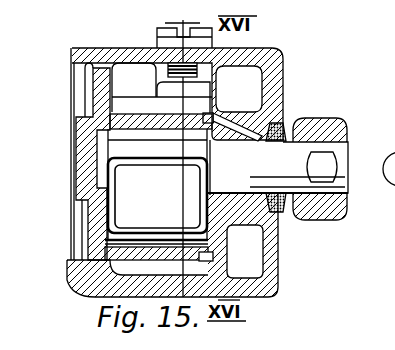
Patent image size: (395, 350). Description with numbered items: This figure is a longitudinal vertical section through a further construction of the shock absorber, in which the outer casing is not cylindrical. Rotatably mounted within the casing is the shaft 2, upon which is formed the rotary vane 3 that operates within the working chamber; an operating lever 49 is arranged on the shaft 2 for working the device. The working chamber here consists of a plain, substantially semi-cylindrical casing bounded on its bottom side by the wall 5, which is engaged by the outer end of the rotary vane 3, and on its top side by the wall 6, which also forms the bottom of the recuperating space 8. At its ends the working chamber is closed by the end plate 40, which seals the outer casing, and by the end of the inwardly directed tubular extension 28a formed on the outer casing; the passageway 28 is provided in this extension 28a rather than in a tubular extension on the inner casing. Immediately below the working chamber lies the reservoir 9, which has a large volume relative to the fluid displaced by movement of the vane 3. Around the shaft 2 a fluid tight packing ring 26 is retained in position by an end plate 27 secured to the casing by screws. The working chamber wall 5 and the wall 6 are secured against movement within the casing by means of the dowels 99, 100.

The shaft 2 is at (312, 147).
The rotary vane 3 is at (127, 185).
The wall 5 is at (192, 262).
The wall 6 is at (128, 116).
The recuperating space 8 is at (118, 84).
The reservoir 9 is at (110, 266).
The fluid tight packing ring 26 is at (287, 128).
The end plate 27 is at (281, 204).
The passageway 28 is at (232, 119).
The inwardly directed tubular extension 28a is at (247, 118).
The end plate 40 is at (95, 103).
The lever 49 is at (338, 125).
The dowel 99 is at (213, 257).
The dowel 100 is at (185, 97).